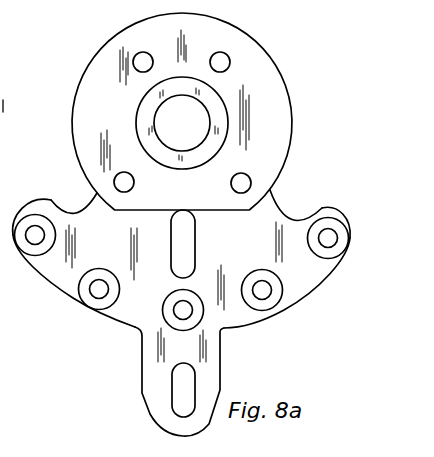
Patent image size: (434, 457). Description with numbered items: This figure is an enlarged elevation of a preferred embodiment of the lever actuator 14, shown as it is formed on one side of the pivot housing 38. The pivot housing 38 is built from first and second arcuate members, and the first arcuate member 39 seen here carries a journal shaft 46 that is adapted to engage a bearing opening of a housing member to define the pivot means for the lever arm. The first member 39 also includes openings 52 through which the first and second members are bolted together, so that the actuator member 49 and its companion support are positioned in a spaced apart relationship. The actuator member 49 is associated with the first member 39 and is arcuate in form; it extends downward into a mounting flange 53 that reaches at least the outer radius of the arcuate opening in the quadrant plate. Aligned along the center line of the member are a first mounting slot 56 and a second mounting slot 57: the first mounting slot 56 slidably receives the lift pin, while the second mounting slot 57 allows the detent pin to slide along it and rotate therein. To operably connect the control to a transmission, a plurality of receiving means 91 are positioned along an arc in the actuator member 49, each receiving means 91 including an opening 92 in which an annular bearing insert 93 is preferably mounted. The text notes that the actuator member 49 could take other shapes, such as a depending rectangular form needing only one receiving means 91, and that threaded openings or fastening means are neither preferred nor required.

The lever actuator 14 is at (325, 284).
The pivot housing 38 is at (94, 46).
The first arcuate member 39 is at (280, 112).
The journal shaft 46 is at (148, 112).
The actuator member 49 is at (109, 320).
The openings 52 is at (226, 56).
The mounting flange 53 is at (160, 410).
The first mounting slot 56 is at (197, 241).
The second mounting slot 57 is at (176, 383).
The receiving means 91 is at (347, 218).
The opening 92 is at (282, 290).
The annular bearing insert 93 is at (264, 299).